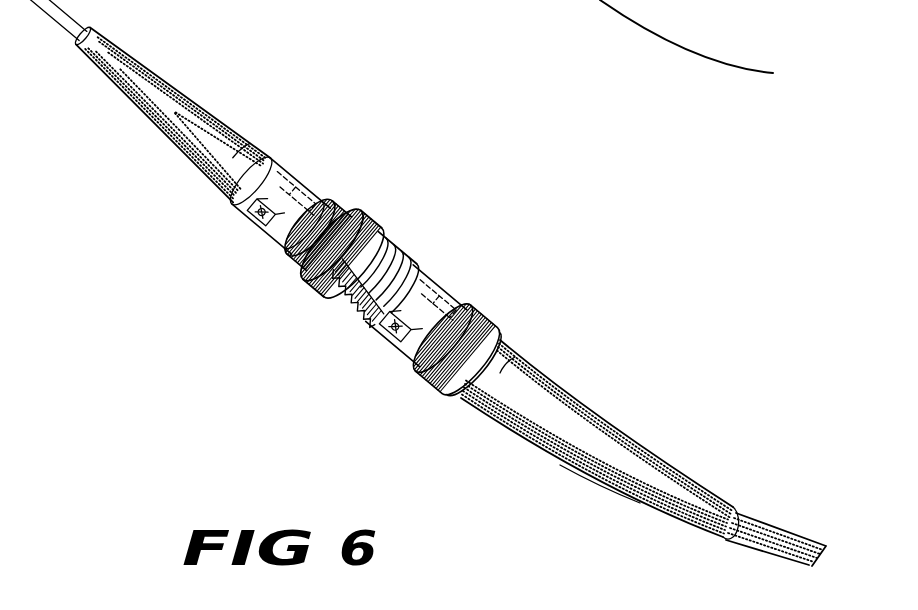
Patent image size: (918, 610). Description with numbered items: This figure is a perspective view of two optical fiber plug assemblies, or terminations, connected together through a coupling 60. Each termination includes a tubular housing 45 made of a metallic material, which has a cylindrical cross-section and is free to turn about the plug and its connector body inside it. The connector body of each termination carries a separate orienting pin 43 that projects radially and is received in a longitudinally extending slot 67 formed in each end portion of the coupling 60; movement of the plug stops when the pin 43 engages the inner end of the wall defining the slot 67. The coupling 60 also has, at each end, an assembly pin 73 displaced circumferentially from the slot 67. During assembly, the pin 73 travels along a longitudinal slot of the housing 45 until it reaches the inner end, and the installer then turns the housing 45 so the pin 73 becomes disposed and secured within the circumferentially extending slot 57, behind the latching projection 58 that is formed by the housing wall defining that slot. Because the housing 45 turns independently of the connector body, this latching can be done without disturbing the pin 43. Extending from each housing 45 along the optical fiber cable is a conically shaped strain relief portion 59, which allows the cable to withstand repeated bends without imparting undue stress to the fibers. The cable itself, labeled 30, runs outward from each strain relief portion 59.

The cable 30 is at (226, 127).
The orienting pin 43 is at (318, 189).
The tubular housing 45 is at (304, 169).
The circumferentially extending slot 57 is at (272, 218).
The latching projection 58 is at (372, 327).
The strain relief portion 59 is at (557, 384).
The coupling 60 is at (399, 199).
The longitudinally extending slot 67 is at (297, 166).
The assembly pin 73 is at (270, 224).